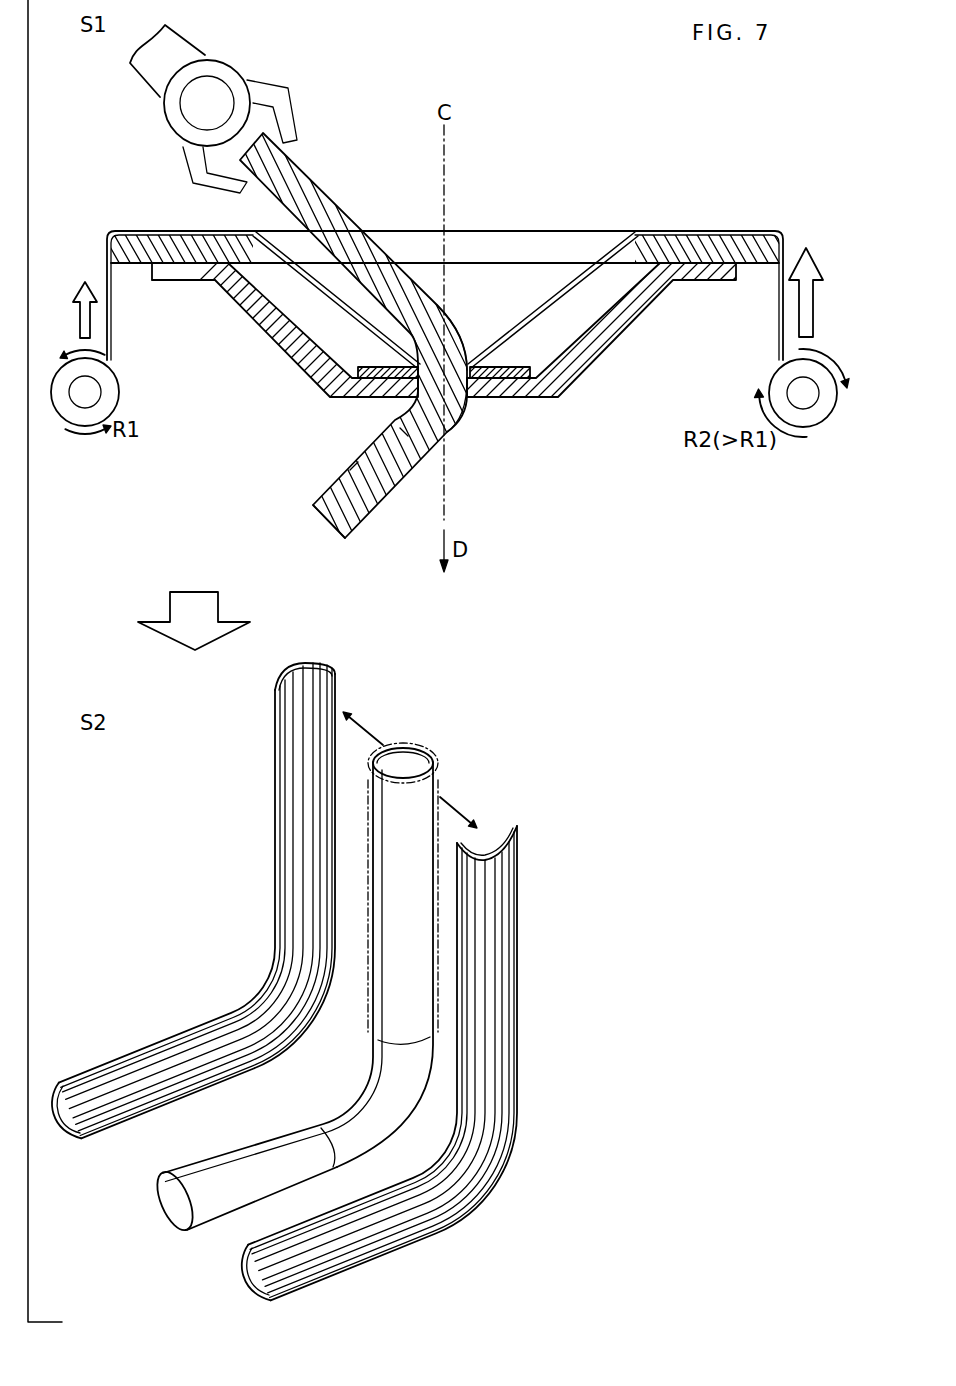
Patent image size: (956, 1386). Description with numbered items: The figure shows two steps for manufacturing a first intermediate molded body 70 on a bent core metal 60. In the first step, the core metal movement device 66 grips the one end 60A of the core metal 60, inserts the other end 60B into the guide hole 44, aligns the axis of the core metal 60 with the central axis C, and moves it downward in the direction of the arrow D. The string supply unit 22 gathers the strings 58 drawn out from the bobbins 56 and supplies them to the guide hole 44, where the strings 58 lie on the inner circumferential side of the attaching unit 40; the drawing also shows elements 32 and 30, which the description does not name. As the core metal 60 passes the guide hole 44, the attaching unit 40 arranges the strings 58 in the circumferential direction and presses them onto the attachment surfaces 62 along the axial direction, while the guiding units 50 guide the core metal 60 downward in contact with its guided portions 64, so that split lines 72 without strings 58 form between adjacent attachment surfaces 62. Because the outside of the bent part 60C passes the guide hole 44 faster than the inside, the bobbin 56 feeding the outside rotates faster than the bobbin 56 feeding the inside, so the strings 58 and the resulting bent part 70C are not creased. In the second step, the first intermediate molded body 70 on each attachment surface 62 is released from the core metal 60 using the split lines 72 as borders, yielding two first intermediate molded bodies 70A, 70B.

The string supply unit 22 is at (700, 214).
The nozzle body 30 is at (416, 330).
The nozzle block 32 is at (198, 280).
The attaching unit 40 is at (393, 367).
The guide hole 44 is at (423, 373).
The guiding units 50 is at (498, 364).
The bobbins 56 is at (108, 390).
The strings 58 is at (322, 288).
The core metal 60 is at (331, 197).
The one end of the core metal 60A is at (205, 158).
The other end of the core metal 60B is at (322, 517).
The bent part of the core metal 60C is at (463, 340).
The attachment surfaces 62 is at (365, 451).
The guided portions 64 is at (208, 1167).
The core metal movement device 66 is at (180, 48).
The first intermediate molded body 70 is at (342, 981).
The first intermediate molded body 70A is at (278, 772).
The first intermediate molded body 70B is at (510, 872).
The bent part of the first intermediate molded body 70C is at (467, 389).
The split lines 72 is at (372, 773).